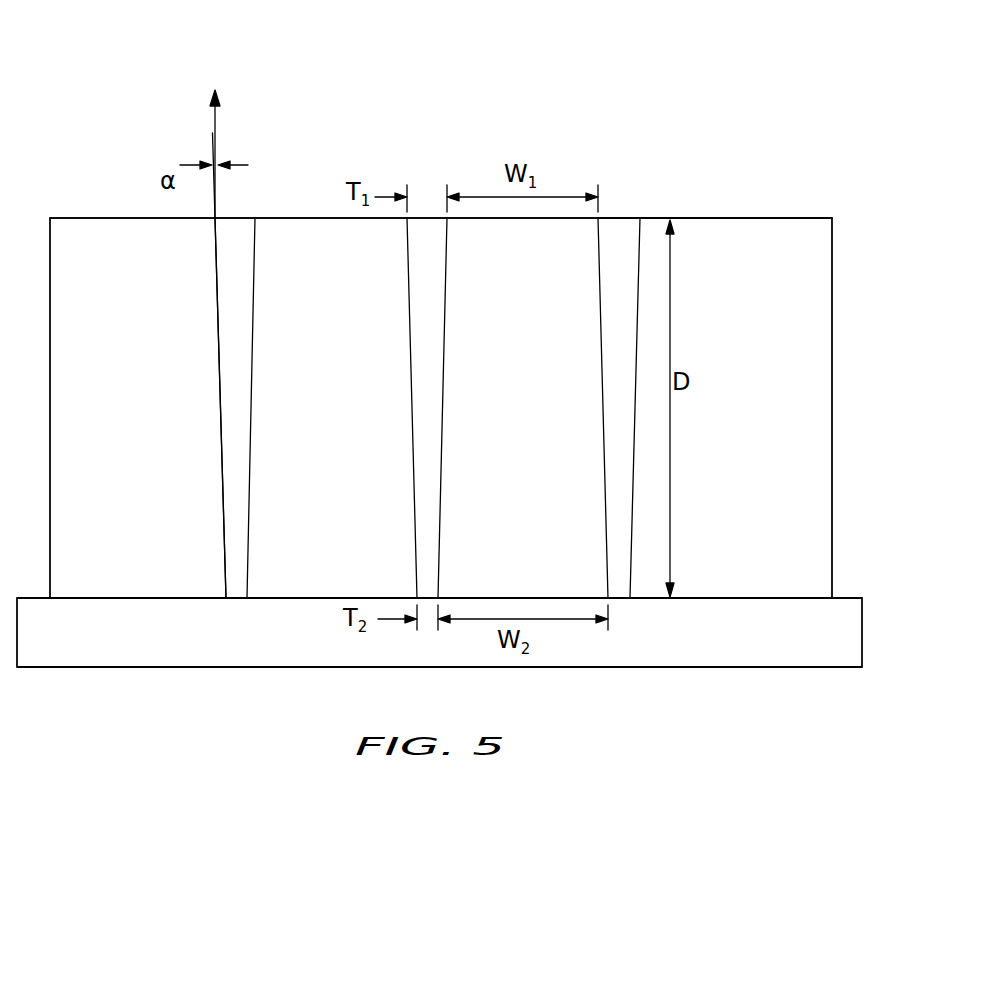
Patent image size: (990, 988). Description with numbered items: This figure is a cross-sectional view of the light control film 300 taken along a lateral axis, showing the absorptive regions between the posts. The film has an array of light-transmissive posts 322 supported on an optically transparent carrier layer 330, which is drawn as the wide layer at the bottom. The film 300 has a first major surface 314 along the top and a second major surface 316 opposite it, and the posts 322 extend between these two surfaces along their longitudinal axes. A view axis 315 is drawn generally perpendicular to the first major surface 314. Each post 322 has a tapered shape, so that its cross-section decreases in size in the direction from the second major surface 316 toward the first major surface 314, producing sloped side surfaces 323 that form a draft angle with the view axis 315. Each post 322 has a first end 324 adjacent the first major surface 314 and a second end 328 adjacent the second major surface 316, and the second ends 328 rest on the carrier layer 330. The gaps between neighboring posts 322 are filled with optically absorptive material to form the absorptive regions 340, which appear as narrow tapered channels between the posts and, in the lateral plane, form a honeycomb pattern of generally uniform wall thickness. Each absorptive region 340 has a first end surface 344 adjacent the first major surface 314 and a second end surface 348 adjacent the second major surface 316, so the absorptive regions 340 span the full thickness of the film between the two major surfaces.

The light control film 300 is at (896, 86).
The first major surface 314 is at (76, 218).
The view axis 315 is at (217, 140).
The second major surface 316 is at (88, 598).
The posts 322 is at (152, 462).
The side surfaces 323 is at (217, 331).
The first end 324 is at (746, 218).
The second end 328 is at (773, 598).
The optically transparent carrier layer 330 is at (840, 630).
The absorptive regions 340 is at (245, 275).
The first end surface 344 is at (622, 218).
The second end surface 348 is at (622, 598).